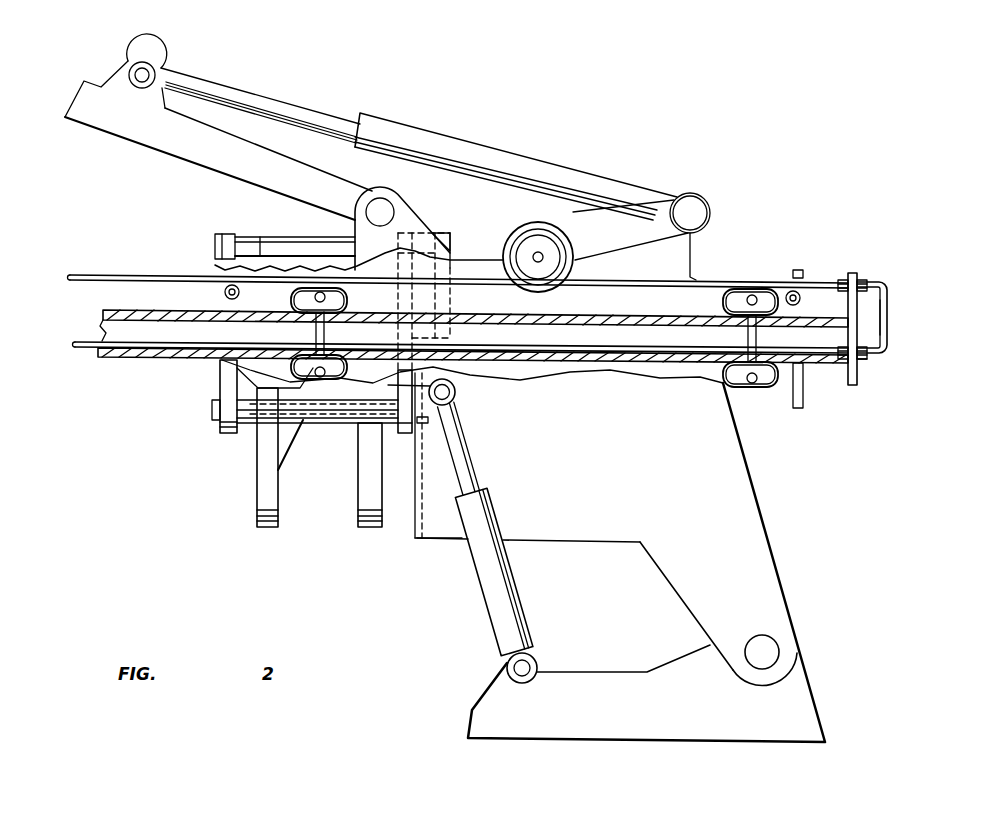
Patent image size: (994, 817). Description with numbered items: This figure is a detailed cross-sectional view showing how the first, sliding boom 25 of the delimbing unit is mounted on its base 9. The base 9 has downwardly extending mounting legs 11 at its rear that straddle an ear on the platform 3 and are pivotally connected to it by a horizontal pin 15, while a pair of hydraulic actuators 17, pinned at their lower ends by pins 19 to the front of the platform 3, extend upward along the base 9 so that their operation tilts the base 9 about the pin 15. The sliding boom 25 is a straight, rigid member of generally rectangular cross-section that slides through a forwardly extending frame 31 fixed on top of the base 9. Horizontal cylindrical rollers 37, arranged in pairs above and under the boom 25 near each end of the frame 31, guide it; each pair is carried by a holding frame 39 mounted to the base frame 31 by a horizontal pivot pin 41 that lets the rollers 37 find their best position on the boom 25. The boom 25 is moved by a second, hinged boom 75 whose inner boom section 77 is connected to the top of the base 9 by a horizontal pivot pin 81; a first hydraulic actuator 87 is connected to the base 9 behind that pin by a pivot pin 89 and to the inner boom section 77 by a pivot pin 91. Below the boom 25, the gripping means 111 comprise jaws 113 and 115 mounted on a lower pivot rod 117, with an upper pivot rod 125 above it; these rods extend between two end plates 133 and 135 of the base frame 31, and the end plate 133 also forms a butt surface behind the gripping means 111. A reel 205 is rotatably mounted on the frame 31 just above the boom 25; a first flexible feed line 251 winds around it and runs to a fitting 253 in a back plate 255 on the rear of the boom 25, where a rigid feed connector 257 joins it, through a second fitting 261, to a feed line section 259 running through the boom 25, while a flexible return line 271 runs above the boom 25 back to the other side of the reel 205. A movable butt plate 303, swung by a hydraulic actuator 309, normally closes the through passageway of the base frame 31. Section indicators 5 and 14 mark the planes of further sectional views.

The platform 3 is at (103, 293).
The section line 5-5 / pivot hole 5 is at (285, 310).
The base 9 is at (762, 496).
The mounting legs 11 is at (780, 567).
The section line 14- 14 is at (417, 105).
The horizontal pin 15 is at (777, 643).
The hydraulic actuators 17 is at (522, 599).
The pins 19 is at (537, 660).
The first, sliding boom 25 is at (141, 304).
The frame 31 is at (708, 275).
The horizontal cylindrical rollers 37 is at (333, 302).
The holding frame 39 is at (303, 312).
The horizontal pivot pin 41 is at (321, 303).
The second, hinged boom 75 is at (73, 126).
The inner boom section 77 is at (137, 146).
The horizontal pivot pin 81 is at (392, 203).
The first hydraulic actuator 87 is at (552, 162).
The pivot pin 89 is at (698, 193).
The pivot pin 91 is at (150, 62).
The gripping means 111 is at (232, 477).
The jaw 113 is at (263, 528).
The jaw 115 is at (367, 532).
The lower pivot rod 117 is at (212, 408).
The upper pivot rod 125 is at (213, 240).
The end plate 133 is at (220, 378).
The end plate 135 is at (455, 389).
The reel 205 is at (560, 228).
The first flexible feed line 251 is at (616, 280).
The fitting 253 is at (872, 283).
The back plate 255 is at (855, 273).
The rigid feed connector 257 is at (890, 337).
The feed line section 259 is at (483, 347).
The second fitting 261 is at (864, 362).
The flexible return line 271 is at (93, 273).
The movable butt plate 303 is at (398, 486).
The hydraulic actuator 309 is at (453, 234).